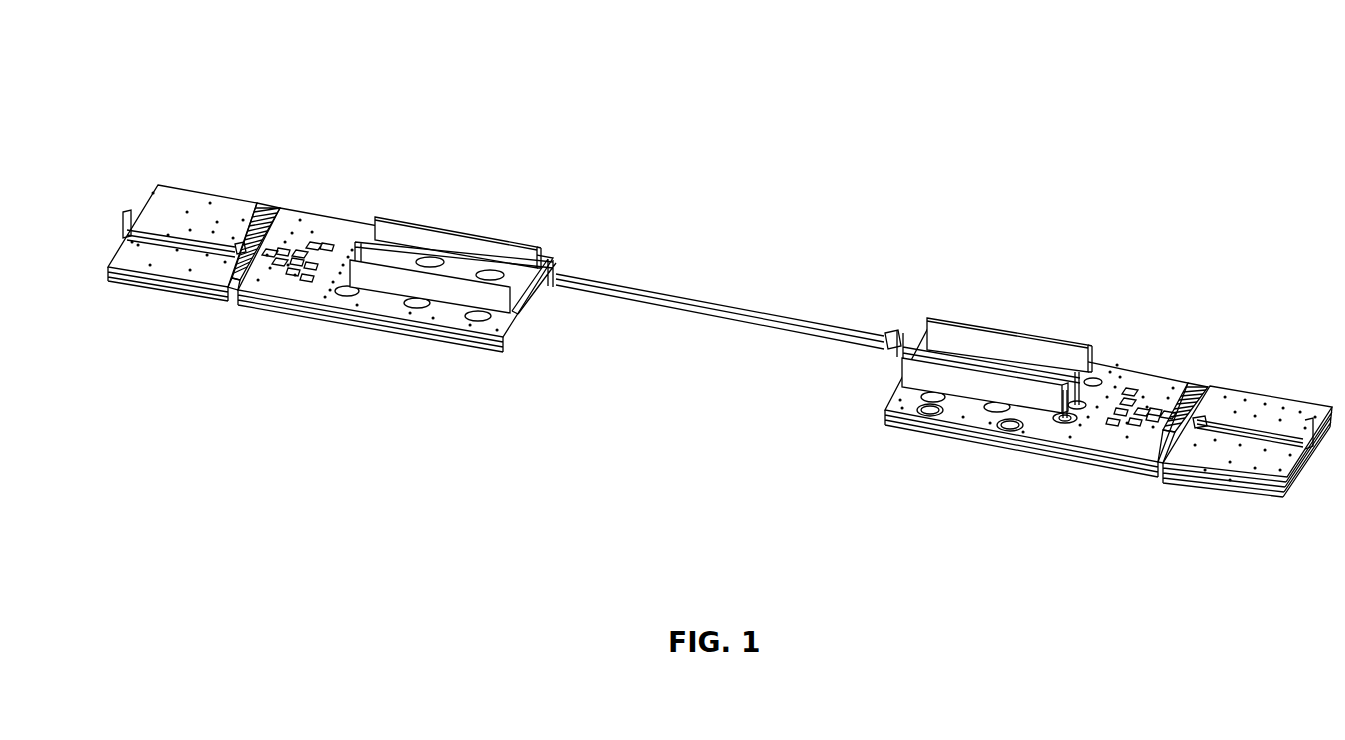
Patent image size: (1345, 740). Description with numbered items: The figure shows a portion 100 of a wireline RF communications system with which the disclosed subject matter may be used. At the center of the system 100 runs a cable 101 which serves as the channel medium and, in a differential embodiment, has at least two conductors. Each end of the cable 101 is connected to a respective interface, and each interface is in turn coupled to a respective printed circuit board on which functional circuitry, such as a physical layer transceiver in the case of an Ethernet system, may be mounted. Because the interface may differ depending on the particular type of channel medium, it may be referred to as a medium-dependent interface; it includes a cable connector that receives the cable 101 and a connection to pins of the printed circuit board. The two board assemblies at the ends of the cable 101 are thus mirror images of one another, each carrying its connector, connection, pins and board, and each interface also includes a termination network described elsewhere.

The portion of a wireline RF communications system 100 is at (137, 78).
The cable 101 is at (667, 293).